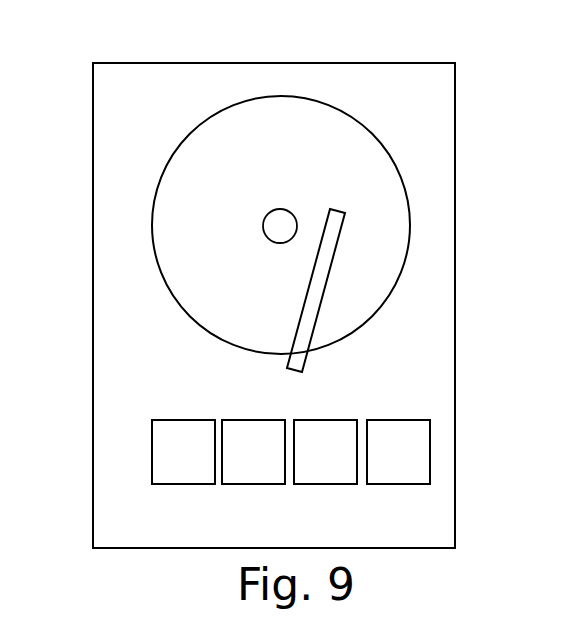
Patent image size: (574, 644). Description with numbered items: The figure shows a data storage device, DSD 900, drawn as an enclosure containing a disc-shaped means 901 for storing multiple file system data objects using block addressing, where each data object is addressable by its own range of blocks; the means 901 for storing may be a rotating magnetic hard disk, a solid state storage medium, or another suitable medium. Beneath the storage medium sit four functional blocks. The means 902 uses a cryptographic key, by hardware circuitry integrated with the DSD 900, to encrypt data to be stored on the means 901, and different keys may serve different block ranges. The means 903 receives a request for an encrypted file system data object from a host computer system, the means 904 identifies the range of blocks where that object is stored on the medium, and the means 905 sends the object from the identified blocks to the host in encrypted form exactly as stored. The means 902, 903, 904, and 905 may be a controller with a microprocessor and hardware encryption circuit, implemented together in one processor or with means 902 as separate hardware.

The DSD 900 is at (272, 63).
The means for storing 901 is at (375, 138).
The means for using a cryptographic key 902 is at (187, 420).
The means for receiving a request 903 is at (249, 420).
The means for identifying a range of blocks 904 is at (322, 420).
The means for sending the file system data object 905 is at (389, 420).